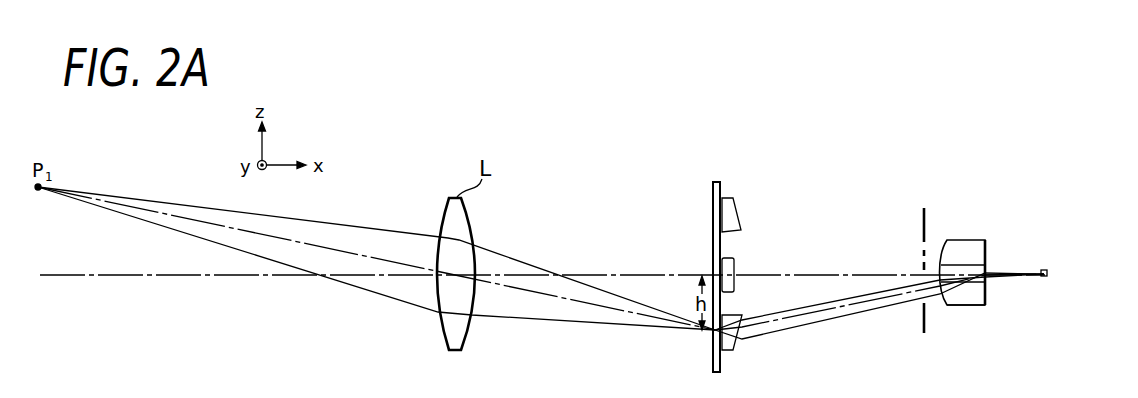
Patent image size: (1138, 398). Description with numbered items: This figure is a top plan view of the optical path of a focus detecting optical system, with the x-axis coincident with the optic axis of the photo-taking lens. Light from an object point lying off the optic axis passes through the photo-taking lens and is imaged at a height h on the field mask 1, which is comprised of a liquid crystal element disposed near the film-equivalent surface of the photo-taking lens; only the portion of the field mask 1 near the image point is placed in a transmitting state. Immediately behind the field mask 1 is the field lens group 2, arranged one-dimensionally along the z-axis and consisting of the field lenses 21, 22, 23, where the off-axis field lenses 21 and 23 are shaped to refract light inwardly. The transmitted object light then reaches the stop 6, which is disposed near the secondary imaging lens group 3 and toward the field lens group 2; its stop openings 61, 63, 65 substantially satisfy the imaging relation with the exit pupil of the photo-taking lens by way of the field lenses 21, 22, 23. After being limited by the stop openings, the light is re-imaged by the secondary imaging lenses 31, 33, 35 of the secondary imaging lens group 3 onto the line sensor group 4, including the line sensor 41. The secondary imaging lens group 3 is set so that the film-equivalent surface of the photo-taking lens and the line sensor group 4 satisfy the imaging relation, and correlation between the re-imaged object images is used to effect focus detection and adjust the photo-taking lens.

The field mask 1 is at (717, 182).
The field lens group 2 is at (754, 263).
The field lens 21 is at (737, 340).
The field lens 22 is at (734, 267).
The field lens 23 is at (741, 214).
The secondary imaging lens group 3 is at (985, 245).
The secondary imaging lens 31 is at (985, 300).
The secondary imaging lens 33 is at (978, 272).
The secondary imaging lens 35 is at (977, 252).
The line sensor group 4 is at (1070, 252).
The line sensor 41 is at (1050, 274).
The stop 6 is at (889, 252).
The stop opening 61 is at (918, 303).
The stop opening 63 is at (920, 265).
The stop opening 65 is at (920, 248).